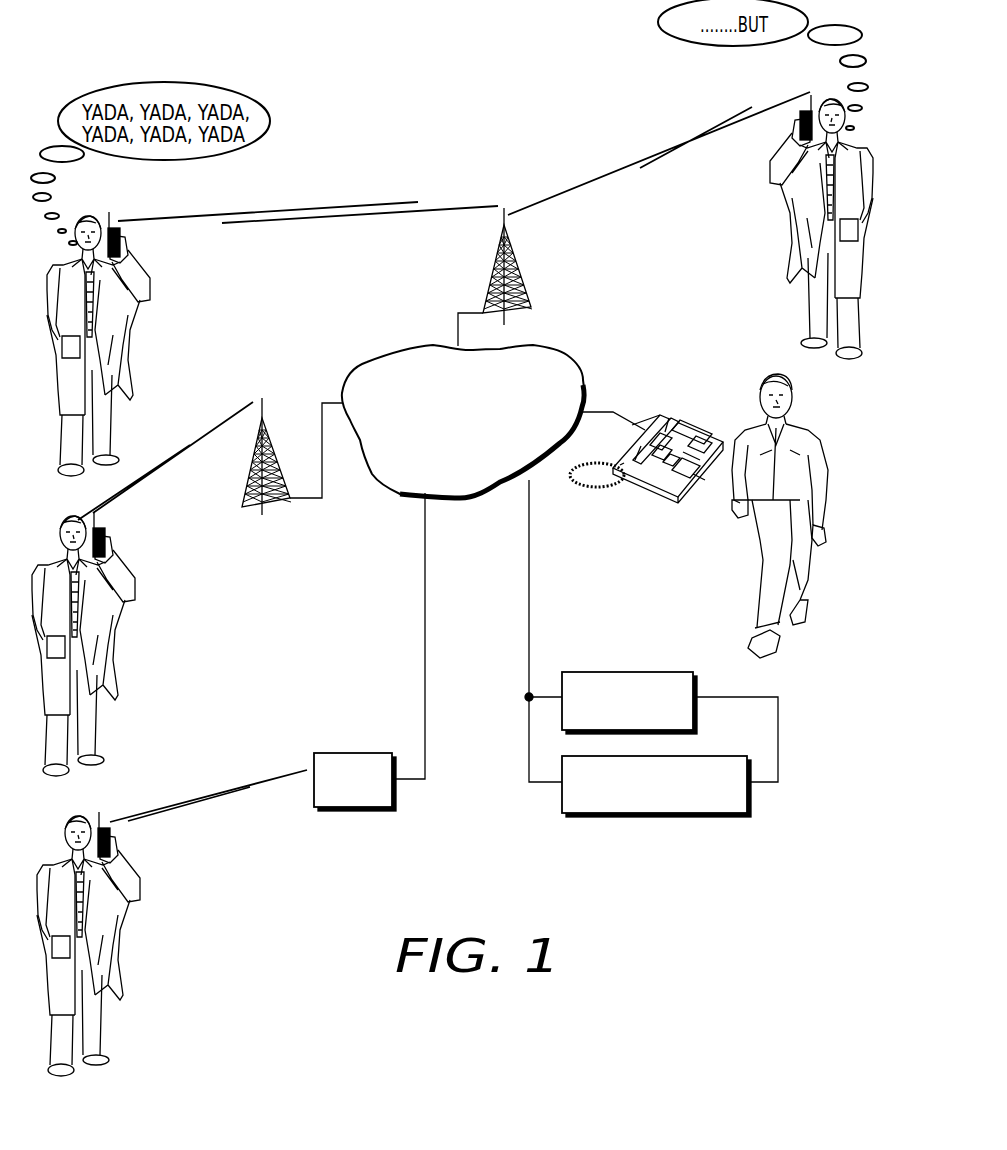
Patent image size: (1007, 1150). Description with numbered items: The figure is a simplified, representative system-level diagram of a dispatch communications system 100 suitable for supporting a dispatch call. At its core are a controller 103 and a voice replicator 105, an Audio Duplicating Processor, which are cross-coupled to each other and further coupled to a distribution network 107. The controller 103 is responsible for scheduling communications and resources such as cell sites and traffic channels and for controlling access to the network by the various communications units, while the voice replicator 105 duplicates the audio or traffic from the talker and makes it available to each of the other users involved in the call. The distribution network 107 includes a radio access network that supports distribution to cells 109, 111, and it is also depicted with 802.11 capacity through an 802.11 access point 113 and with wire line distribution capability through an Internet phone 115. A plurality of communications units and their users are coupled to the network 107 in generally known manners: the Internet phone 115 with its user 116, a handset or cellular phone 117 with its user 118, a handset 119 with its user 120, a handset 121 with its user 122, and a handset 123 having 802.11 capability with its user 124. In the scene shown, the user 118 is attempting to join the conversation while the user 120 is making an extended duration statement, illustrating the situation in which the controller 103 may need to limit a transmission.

The system 100 is at (795, 762).
The controller 103 is at (649, 672).
The voice replicator 105 is at (627, 818).
The distribution network 107 is at (585, 372).
The cell 109 is at (520, 262).
The cell 111 is at (250, 476).
The 802.11 access point 113 is at (362, 808).
The Internet phone 115 is at (657, 487).
The user 116 is at (762, 524).
The handset or cellular phone 117 is at (801, 117).
The user 118 is at (803, 216).
The handset 119 is at (120, 236).
The user 120 is at (112, 324).
The handset 121 is at (105, 537).
The user 122 is at (96, 615).
The handset with 802.11 capability 123 is at (110, 838).
The user 124 is at (96, 925).